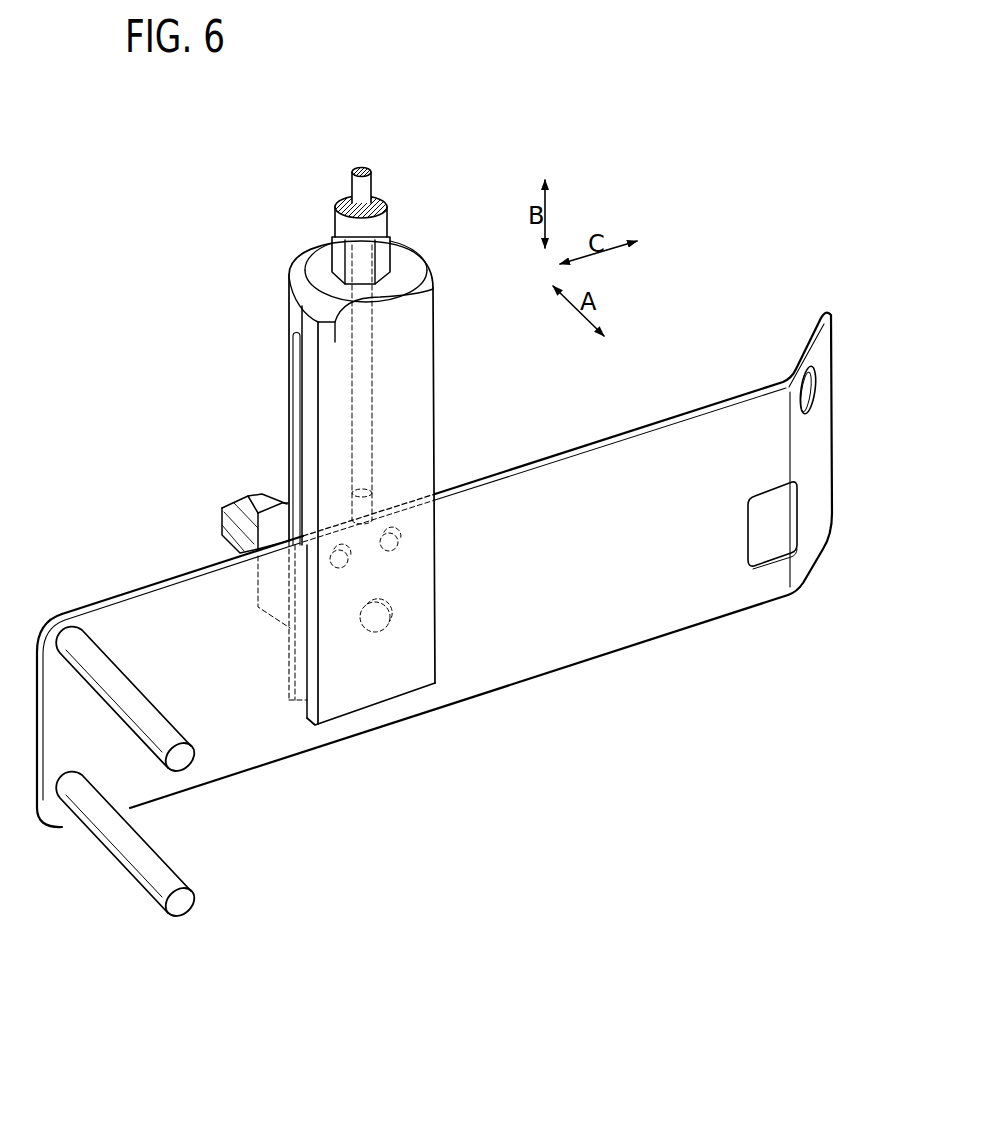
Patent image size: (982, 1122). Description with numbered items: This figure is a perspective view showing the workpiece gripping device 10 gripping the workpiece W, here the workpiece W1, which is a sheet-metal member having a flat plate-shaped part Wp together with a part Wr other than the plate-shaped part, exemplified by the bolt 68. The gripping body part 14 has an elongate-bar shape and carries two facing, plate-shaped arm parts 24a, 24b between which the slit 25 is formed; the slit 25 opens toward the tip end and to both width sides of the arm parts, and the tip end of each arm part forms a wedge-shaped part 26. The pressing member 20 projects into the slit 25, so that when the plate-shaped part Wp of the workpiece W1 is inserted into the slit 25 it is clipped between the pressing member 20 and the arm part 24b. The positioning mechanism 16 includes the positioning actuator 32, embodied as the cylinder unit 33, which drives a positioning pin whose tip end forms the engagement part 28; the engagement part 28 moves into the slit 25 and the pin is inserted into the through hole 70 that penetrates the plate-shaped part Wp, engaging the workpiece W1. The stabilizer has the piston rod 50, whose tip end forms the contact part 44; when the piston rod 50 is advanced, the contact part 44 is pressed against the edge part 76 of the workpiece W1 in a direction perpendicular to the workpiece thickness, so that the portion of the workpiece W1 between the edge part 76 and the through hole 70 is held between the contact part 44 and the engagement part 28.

The workpiece gripping device 10 is at (272, 264).
The gripping body part 14 is at (417, 382).
The positioning mechanism 16 is at (204, 537).
The pressing member 20 is at (341, 576).
The arm part 24a is at (289, 379).
The arm part 24b is at (428, 434).
The slit 25 is at (300, 441).
The wedge-shaped part 26 is at (293, 701).
The engagement part 28 is at (390, 628).
The positioning actuator 32 is at (259, 513).
The cylinder unit 33 is at (188, 516).
The contact part 44 is at (373, 502).
The piston rod 50 is at (367, 184).
The bolt 68 is at (125, 680).
The through hole 70 is at (389, 606).
The edge part 76 is at (130, 592).
The workpiece W is at (434, 570).
The workpiece W1 is at (434, 570).
The plate-shaped part Wp is at (565, 475).
The part other than plate-shaped part Wr is at (135, 774).